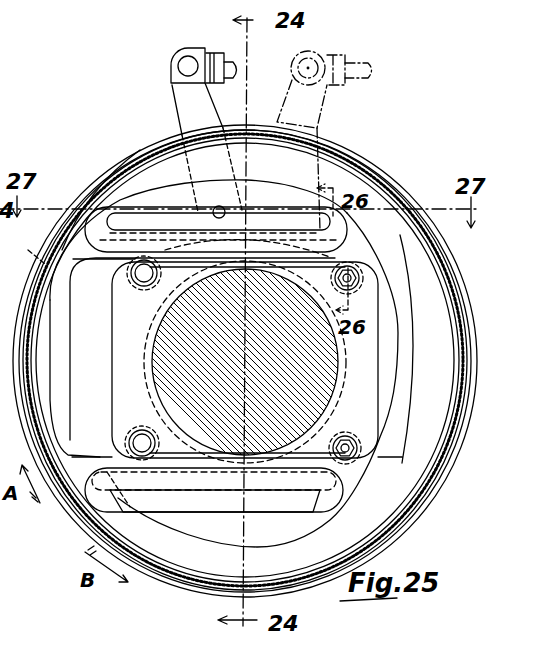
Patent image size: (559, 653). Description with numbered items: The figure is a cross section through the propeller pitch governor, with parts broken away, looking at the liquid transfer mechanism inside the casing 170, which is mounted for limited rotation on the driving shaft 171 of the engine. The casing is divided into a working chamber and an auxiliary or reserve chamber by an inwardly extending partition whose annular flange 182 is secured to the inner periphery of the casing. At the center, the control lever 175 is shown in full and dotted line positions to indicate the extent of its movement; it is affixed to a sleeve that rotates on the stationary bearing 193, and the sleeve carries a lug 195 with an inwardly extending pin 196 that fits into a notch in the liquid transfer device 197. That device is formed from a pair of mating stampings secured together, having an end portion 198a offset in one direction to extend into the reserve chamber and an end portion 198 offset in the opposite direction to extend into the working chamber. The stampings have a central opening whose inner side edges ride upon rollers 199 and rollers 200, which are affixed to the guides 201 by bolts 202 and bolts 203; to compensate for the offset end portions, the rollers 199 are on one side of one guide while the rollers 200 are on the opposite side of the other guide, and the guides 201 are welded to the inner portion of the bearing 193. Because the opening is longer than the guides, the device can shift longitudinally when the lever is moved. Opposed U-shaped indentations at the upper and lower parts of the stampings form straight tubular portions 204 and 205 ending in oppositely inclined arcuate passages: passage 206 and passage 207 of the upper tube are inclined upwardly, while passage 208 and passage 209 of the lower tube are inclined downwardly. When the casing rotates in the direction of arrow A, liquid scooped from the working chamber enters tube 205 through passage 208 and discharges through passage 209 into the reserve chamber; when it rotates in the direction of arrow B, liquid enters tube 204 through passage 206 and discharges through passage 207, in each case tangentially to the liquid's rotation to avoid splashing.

The casing 170 is at (414, 523).
The driving shaft 171 is at (272, 372).
The control lever 175 is at (172, 95).
The annular flange 182 is at (38, 290).
The stationary bearing 193 is at (173, 337).
The lug 195 is at (242, 212).
The pin 196 is at (226, 197).
The liquid transfer device 197 is at (382, 437).
The end portion 198 is at (50, 301).
The end portion 198a is at (386, 458).
The rollers 199 is at (130, 278).
The rollers 200 is at (370, 272).
The guides 201 is at (112, 392).
The bolts 202 is at (143, 287).
The bolts 203 is at (360, 278).
The tubular portion 204 is at (132, 213).
The tubular portion 205 is at (192, 493).
The passage 206 is at (100, 187).
The passage 207 is at (303, 190).
The passage 208 is at (113, 513).
The passage 209 is at (330, 523).